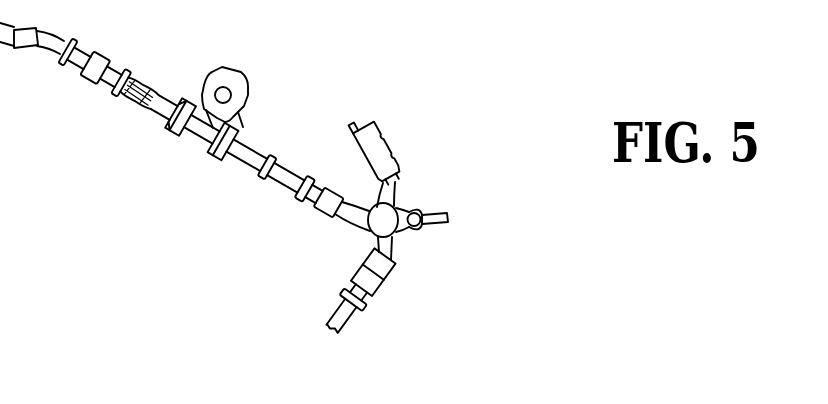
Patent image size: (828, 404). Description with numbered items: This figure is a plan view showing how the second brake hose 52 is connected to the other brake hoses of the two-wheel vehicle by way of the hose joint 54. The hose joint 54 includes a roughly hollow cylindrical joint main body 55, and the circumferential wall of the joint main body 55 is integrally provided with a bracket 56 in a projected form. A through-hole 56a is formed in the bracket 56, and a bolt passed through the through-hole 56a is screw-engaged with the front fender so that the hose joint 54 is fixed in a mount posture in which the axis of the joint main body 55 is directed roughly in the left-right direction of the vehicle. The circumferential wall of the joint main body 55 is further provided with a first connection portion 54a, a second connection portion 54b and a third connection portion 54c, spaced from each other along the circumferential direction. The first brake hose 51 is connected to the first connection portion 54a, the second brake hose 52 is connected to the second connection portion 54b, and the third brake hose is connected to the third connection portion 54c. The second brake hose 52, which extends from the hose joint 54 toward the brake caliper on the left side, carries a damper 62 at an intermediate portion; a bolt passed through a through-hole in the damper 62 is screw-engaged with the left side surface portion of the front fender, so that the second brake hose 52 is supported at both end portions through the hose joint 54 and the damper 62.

The first brake hose 51 is at (372, 128).
The second brake hose 52 is at (277, 187).
The hose joint 54 is at (485, 230).
The first connection portion 54a is at (394, 186).
The second connection portion 54b is at (347, 229).
The third connection portion 54c is at (392, 238).
The joint main body 55 is at (397, 237).
The bracket 56 is at (396, 228).
The through-hole 56a is at (421, 213).
The damper 62 is at (212, 84).